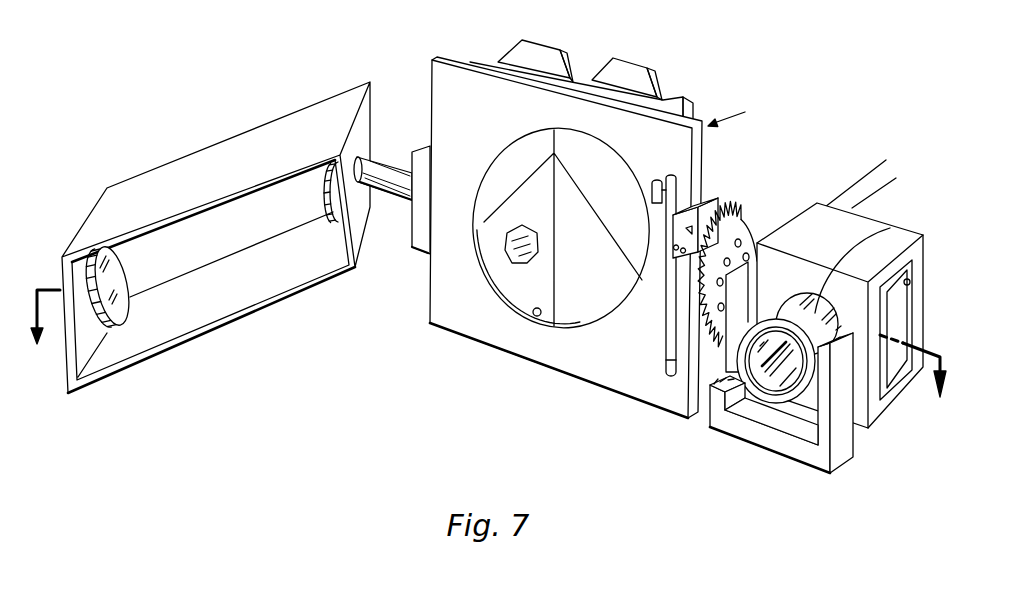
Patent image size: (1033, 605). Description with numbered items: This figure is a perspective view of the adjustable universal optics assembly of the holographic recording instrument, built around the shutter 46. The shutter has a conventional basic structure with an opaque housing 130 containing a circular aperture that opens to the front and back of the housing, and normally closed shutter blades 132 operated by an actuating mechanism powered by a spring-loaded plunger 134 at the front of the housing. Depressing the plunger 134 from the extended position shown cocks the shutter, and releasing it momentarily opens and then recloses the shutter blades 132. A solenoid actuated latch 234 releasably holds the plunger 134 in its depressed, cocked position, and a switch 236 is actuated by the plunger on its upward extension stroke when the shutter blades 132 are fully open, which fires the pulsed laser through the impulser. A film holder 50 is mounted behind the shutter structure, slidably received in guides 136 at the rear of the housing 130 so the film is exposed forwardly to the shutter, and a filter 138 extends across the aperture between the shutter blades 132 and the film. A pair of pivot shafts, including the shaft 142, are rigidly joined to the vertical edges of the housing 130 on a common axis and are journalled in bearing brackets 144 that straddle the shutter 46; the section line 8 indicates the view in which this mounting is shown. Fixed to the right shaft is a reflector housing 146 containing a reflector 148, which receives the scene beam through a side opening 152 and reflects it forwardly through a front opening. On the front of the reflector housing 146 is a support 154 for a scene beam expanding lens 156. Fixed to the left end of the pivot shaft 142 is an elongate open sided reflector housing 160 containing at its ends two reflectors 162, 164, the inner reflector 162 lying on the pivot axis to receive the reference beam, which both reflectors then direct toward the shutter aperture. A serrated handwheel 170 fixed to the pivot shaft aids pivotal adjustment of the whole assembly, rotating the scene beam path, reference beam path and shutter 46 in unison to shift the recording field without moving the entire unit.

The section line 8- 8 is at (489, 355).
The shutter 46 is at (738, 113).
The film holder 50 is at (580, 72).
The opaque housing 130 is at (450, 60).
The shutter blades 132 is at (590, 296).
The spring-loaded plunger 134 is at (672, 177).
The guides 136 is at (697, 113).
The filter 138 is at (510, 258).
The pivot shaft 142 is at (389, 163).
The bearing brackets 144 is at (414, 250).
The reflector housing 146 is at (865, 222).
The reflector 148 is at (892, 228).
The side opening 152 is at (912, 283).
The support 154 is at (838, 455).
The scene beam expanding lens 156 is at (777, 403).
The elongate open sided reflector housing 160 is at (148, 172).
The reflector 162 is at (331, 197).
The reflector 164 is at (124, 273).
The serrated handwheel 170 is at (748, 218).
The solenoid actuated latch 234 is at (706, 206).
The switch 236 is at (653, 180).